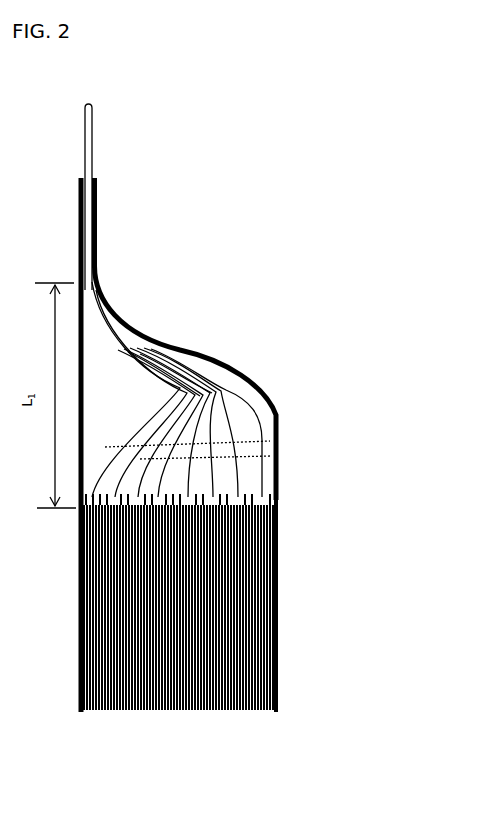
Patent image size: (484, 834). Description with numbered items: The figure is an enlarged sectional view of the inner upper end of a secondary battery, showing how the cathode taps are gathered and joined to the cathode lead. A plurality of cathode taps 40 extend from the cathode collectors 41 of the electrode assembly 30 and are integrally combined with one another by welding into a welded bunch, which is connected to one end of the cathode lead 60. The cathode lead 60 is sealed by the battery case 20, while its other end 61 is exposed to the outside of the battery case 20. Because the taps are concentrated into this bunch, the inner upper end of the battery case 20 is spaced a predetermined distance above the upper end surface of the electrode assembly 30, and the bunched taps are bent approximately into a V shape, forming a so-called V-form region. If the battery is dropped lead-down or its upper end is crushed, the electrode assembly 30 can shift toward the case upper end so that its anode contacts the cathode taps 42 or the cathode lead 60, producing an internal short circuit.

The battery case 20 is at (205, 342).
The electrode assembly 30 is at (276, 714).
The cathode taps 40 is at (277, 432).
The cathode collectors 41 is at (78, 545).
The cathode taps 42 is at (277, 468).
The cathode lead 60 is at (103, 280).
The other end of the cathode lead 61 is at (92, 148).